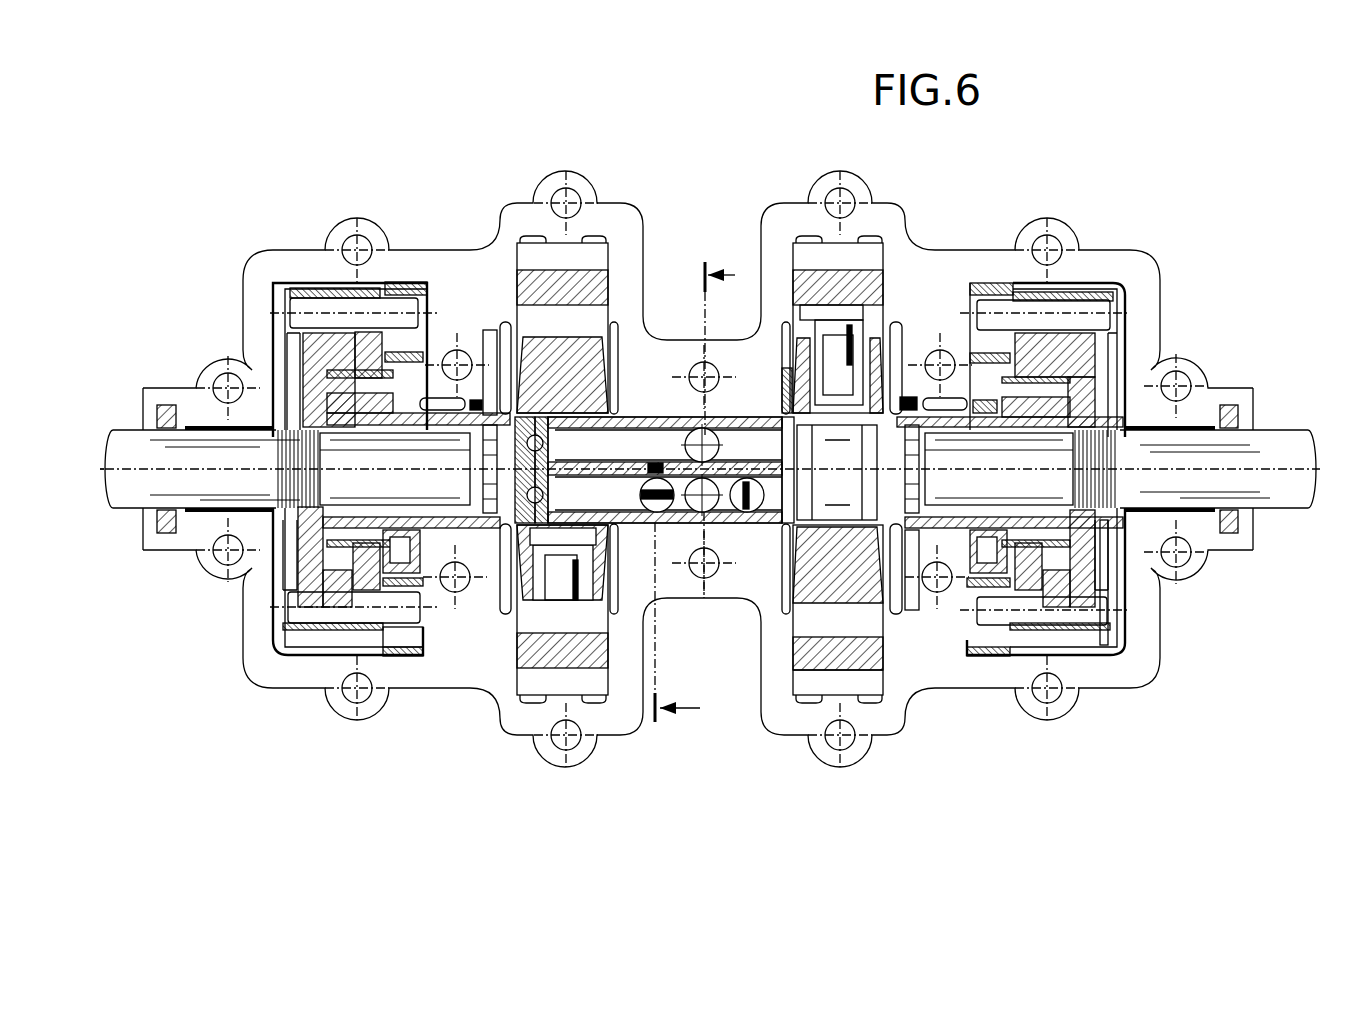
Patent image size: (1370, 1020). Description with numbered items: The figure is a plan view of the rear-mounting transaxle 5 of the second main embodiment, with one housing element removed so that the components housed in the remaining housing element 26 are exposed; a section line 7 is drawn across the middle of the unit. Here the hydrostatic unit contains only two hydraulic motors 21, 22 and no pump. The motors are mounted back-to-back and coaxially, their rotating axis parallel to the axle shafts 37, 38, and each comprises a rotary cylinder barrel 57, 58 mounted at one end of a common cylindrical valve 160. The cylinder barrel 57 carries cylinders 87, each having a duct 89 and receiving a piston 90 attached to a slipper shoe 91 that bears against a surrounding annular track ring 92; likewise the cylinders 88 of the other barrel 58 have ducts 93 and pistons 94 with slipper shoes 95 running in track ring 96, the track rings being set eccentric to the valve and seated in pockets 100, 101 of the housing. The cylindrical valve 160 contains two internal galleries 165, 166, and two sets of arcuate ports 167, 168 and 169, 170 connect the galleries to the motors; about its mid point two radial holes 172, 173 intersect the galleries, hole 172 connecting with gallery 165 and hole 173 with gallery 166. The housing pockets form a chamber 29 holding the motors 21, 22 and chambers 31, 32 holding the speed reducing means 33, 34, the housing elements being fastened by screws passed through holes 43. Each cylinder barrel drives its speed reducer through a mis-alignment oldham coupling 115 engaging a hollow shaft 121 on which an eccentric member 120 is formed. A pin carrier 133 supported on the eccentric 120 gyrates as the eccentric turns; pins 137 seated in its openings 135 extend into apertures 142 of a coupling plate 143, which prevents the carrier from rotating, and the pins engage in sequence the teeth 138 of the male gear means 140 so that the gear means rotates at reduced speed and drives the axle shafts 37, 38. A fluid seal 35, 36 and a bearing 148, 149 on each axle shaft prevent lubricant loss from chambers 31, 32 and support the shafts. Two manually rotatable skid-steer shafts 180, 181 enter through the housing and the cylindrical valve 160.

The transaxle 5 is at (648, 122).
The section line 7- 7 is at (708, 494).
The hydraulic motor 21 is at (455, 737).
The hydraulic motor 22 is at (928, 717).
The housing element 26 is at (503, 226).
The chamber 29 is at (548, 338).
The chamber 31 is at (308, 656).
The chamber 32 is at (1050, 661).
The speed reducing means 33 is at (205, 655).
The speed reducing means 34 is at (1170, 625).
The fluid seal 35 is at (160, 406).
The fluid seal 36 is at (1233, 407).
The axle shaft 37 is at (151, 498).
The axle shaft 38 is at (1201, 463).
The hole 43 is at (850, 208).
The cylinder barrel 57 is at (555, 396).
The cylinder barrel 58 is at (820, 571).
The cylinder 87 is at (525, 615).
The cylinder 88 is at (880, 342).
The duct 89 is at (533, 540).
The piston 90 is at (547, 606).
The slipper shoe 91 is at (530, 667).
The annular track ring 92 is at (531, 290).
The duct 93 is at (793, 377).
The piston 94 is at (813, 366).
The slipper shoe 95 is at (881, 302).
The annular track ring 96 is at (878, 659).
The pocket 100 is at (592, 702).
The pocket 101 is at (796, 704).
The mis-alignment oldham coupling 115 is at (492, 393).
The eccentric member 120 is at (1010, 503).
The hollow shaft 121 is at (410, 516).
The pin carrier 133 is at (1118, 331).
The opening 135 is at (1100, 300).
The pin 137 is at (340, 305).
The teeth 138 is at (1104, 630).
The male gear means 140 is at (320, 356).
The aperture 142 is at (420, 658).
The coupling plate 143 is at (985, 290).
The bearing 148 is at (200, 403).
The bearing 149 is at (1186, 401).
The cylindrical valve 160 is at (655, 420).
The internal gallery 165 is at (645, 494).
The internal gallery 166 is at (731, 458).
The arcuate port 167 is at (640, 515).
The arcuate port 168 is at (684, 445).
The arcuate port 169 is at (812, 498).
The arcuate port 170 is at (818, 471).
The radial hole 172 is at (704, 512).
The radial hole 173 is at (735, 440).
The manually rotatable shaft 180 is at (678, 529).
The manually rotatable shaft 181 is at (770, 526).